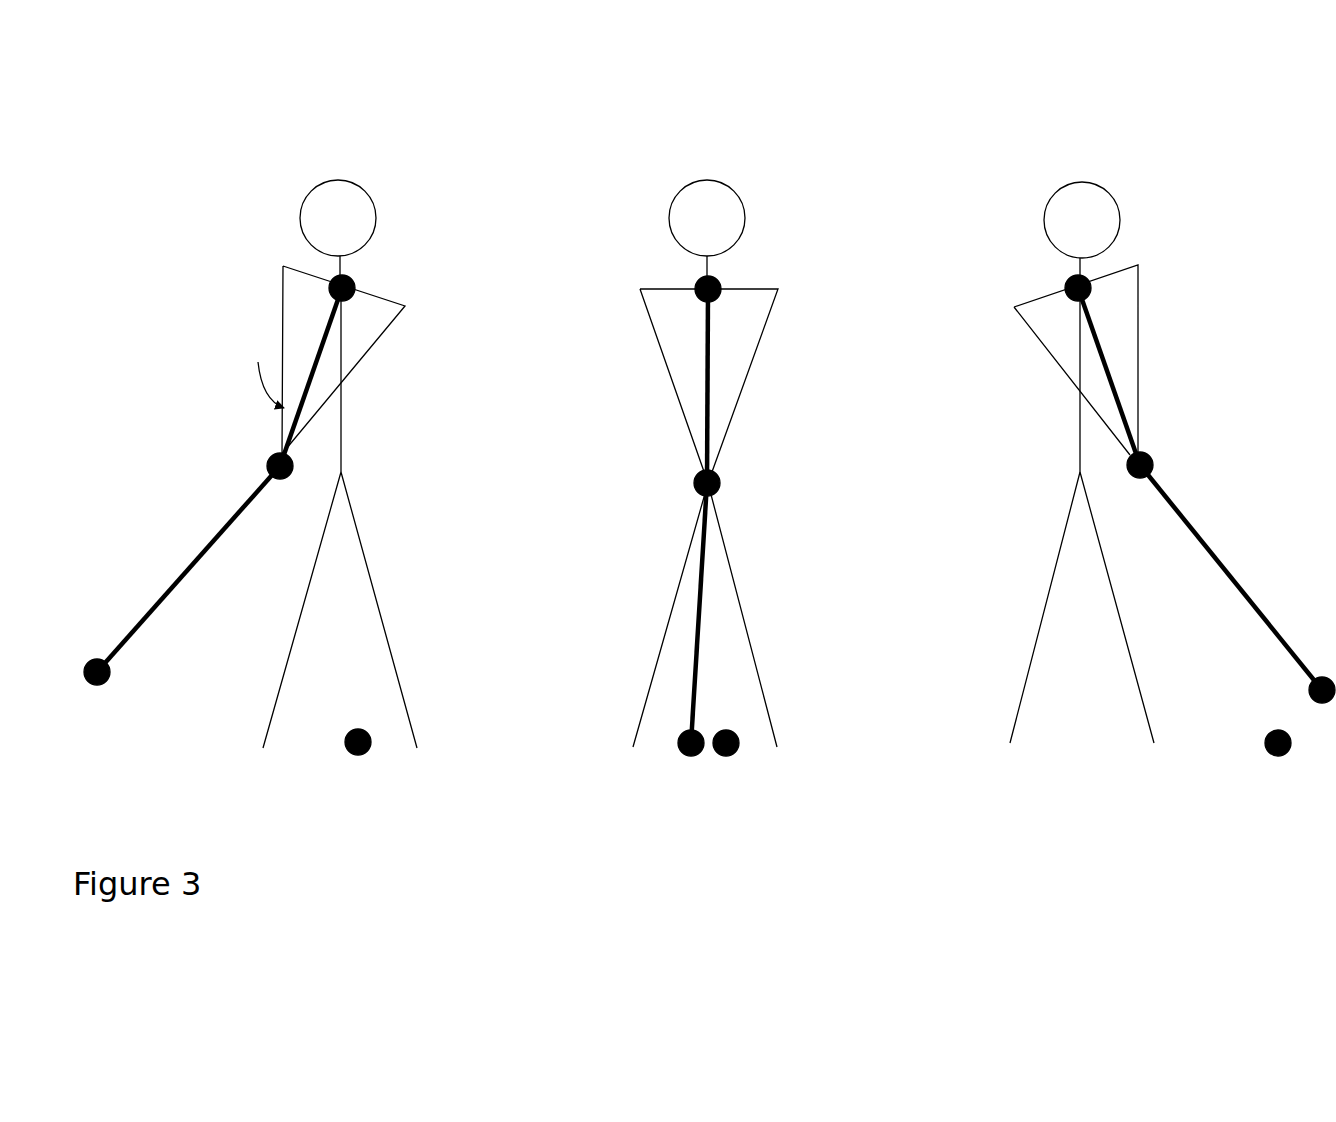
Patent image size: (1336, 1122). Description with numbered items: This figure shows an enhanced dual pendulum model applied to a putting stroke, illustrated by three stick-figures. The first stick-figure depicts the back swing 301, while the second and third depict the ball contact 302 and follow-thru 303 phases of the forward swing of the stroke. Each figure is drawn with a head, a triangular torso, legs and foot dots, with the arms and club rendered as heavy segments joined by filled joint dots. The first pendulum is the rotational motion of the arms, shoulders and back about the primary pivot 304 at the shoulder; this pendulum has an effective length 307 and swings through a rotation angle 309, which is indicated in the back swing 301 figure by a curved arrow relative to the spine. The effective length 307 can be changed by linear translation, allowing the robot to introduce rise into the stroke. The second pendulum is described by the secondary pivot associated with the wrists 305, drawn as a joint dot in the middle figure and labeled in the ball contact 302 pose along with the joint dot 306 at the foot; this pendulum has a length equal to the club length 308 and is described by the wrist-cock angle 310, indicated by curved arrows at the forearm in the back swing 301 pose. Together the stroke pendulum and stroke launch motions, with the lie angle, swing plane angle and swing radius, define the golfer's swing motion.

The back swing 301 is at (348, 128).
The ball contact 302 is at (708, 108).
The follow-thru 303 is at (1085, 108).
The primary pivot 304 is at (698, 282).
The wrists 305 is at (697, 474).
The foot joint 306 is at (683, 732).
The effective length 307 is at (1106, 355).
The club length 308 is at (1219, 555).
The rotation angle 309 is at (349, 415).
The wrist-cock angle 310 is at (292, 425).